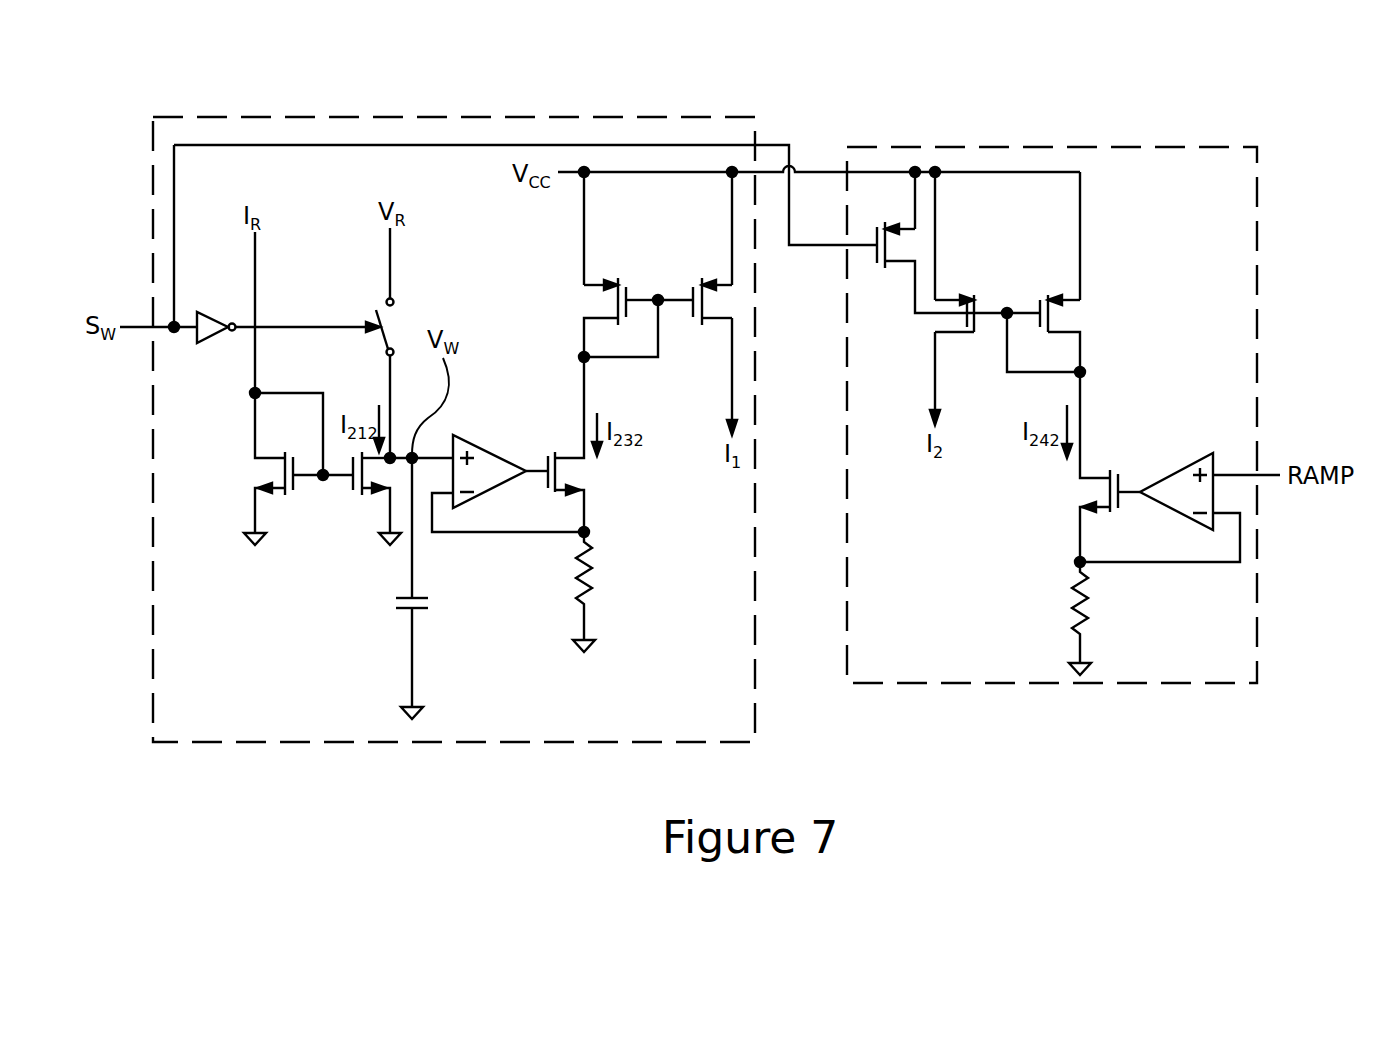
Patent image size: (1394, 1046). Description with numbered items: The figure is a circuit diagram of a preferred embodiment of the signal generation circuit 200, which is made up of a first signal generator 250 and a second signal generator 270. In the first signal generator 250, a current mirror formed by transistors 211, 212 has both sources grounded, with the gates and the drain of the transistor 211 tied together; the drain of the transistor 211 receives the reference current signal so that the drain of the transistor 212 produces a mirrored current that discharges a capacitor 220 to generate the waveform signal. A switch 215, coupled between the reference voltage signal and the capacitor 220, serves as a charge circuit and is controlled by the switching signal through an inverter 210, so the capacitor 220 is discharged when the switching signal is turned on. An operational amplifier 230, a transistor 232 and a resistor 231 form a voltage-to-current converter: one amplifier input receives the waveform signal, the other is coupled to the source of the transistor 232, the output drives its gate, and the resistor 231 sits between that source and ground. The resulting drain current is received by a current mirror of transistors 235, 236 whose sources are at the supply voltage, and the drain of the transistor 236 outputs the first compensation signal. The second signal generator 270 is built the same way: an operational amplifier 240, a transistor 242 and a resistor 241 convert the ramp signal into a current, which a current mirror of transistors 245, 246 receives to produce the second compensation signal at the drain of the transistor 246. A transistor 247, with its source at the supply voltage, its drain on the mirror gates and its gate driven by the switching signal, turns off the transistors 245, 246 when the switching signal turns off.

The signal generation circuit 200 is at (1341, 91).
The inverter 210 is at (208, 311).
The transistor 211 is at (285, 472).
The transistor 212 is at (362, 497).
The switch 215 is at (398, 311).
The capacitor 220 is at (428, 604).
The operational amplifier 230 is at (476, 438).
The resistor 231 is at (588, 566).
The transistor 232 is at (565, 470).
The transistor 235 is at (618, 305).
The transistor 236 is at (705, 300).
The operational amplifier 240 is at (1180, 465).
The resistor 241 is at (1078, 596).
The transistor 242 is at (1108, 489).
The transistor 245 is at (1052, 302).
The transistor 246 is at (965, 322).
The transistor 247 is at (877, 252).
The first signal generator 250 is at (378, 742).
The second signal generator 270 is at (1107, 683).